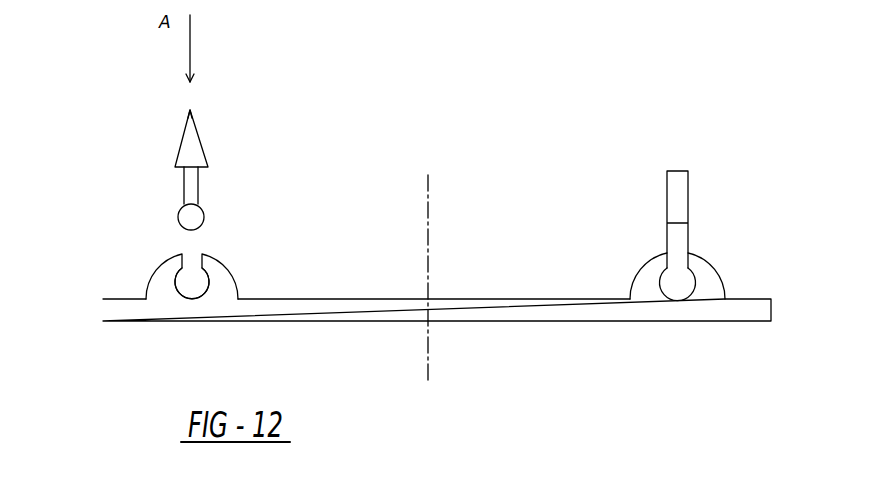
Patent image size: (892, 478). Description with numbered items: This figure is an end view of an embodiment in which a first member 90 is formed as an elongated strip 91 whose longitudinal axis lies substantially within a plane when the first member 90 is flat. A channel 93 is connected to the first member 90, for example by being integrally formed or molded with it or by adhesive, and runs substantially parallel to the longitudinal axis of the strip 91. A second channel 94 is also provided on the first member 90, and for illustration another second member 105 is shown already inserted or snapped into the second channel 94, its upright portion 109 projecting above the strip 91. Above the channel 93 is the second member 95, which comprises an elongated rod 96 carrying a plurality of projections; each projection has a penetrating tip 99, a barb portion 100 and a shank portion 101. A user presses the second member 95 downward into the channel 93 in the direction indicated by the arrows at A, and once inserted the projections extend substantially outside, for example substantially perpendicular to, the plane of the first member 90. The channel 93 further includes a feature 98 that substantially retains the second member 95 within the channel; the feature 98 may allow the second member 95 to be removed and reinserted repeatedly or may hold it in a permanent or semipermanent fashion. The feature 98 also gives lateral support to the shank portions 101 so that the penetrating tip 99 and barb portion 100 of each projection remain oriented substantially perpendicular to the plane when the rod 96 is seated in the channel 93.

The first member 90 is at (566, 133).
The elongated strip 91 is at (547, 298).
The channel 93 is at (187, 298).
The second channel 94 is at (668, 300).
The second member 95 is at (213, 138).
The elongated rod 96 is at (204, 217).
The feature 98 is at (228, 270).
The penetrating tip 99 is at (190, 108).
The barb portion 100 is at (208, 163).
The shank portion 101 is at (198, 186).
The second member 105 is at (682, 240).
The pin 109 is at (677, 170).